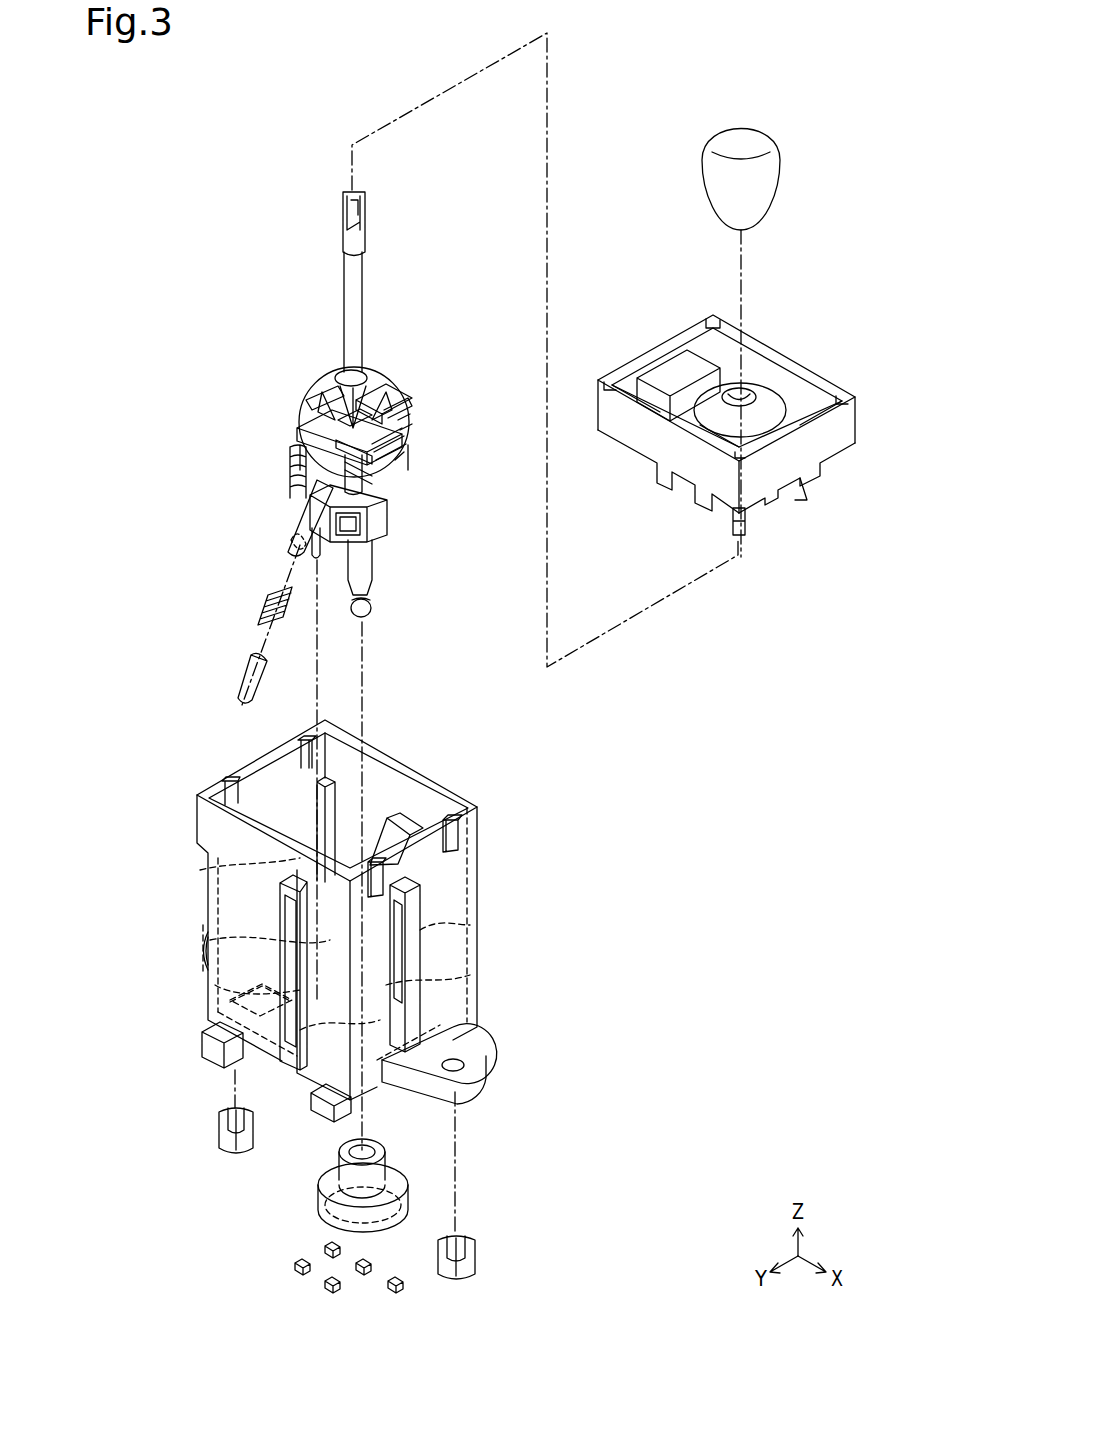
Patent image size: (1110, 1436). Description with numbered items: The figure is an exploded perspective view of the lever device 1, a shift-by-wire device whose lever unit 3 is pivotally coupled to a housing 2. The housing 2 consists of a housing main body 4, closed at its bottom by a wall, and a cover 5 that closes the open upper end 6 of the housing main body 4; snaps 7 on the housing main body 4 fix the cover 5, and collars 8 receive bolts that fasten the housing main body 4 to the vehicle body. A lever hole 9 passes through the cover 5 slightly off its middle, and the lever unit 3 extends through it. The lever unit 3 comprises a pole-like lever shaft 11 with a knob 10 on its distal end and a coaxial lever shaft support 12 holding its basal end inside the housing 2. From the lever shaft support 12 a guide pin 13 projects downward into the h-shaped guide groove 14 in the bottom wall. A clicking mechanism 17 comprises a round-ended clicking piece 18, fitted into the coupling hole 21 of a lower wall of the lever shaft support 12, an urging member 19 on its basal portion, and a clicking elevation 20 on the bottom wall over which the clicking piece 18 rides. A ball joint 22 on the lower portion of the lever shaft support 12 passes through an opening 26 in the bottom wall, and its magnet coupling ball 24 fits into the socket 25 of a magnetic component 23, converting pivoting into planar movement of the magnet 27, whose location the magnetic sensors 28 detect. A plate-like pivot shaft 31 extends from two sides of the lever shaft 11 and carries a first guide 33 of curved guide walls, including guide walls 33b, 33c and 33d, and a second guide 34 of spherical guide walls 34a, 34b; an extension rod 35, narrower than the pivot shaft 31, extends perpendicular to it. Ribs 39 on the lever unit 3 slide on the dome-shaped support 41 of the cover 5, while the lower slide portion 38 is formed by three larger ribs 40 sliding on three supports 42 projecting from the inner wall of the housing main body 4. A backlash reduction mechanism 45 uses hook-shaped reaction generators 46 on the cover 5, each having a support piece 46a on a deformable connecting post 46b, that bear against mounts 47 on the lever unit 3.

The lever device 1 is at (180, 121).
The housing 2 is at (667, 708).
The lever unit 3 is at (511, 178).
The housing main body 4 is at (478, 943).
The cover 5 is at (850, 445).
The open upper end 6 is at (387, 770).
The snaps 7 is at (305, 738).
The collars 8 is at (220, 1130).
The lever hole 9 is at (752, 388).
The knob 10 is at (701, 190).
The lever shaft 11 is at (363, 268).
The lever shaft support 12 is at (393, 372).
The guide pin 13 is at (320, 560).
The guide groove 14 is at (212, 928).
The clicking mechanism 17 is at (245, 570).
The clicking piece 18 is at (242, 678).
The urging member 19 is at (268, 607).
The clicking elevation 20 is at (216, 988).
The coupling hole 21 is at (292, 515).
The ball joint 22 is at (393, 589).
The magnetic component 23 is at (352, 1185).
The magnet coupling ball 24 is at (357, 622).
The socket 25 is at (388, 1153).
The opening 26 is at (466, 1065).
The magnet 27 is at (325, 1222).
The magnetic sensors 28 is at (397, 1280).
The pivot shaft 31 is at (300, 418).
The first guide 33 is at (343, 437).
The guide wall 33b is at (306, 398).
The guide wall 33c is at (410, 402).
The guide wall 33d is at (388, 478).
The second guide 34 is at (352, 403).
The guide wall 34a is at (398, 388).
The guide wall 34b is at (298, 432).
The extension rod 35 is at (402, 430).
The lower slide portion 38 is at (370, 392).
The ribs 39 is at (324, 390).
The ribs 40 is at (402, 413).
The support 41 is at (778, 406).
The supports 42 is at (405, 828).
The backlash reduction mechanism 45 is at (726, 450).
The reaction generators 46 is at (753, 531).
The support piece 46a is at (733, 528).
The connecting post 46b is at (733, 512).
The mounts 47 is at (414, 442).